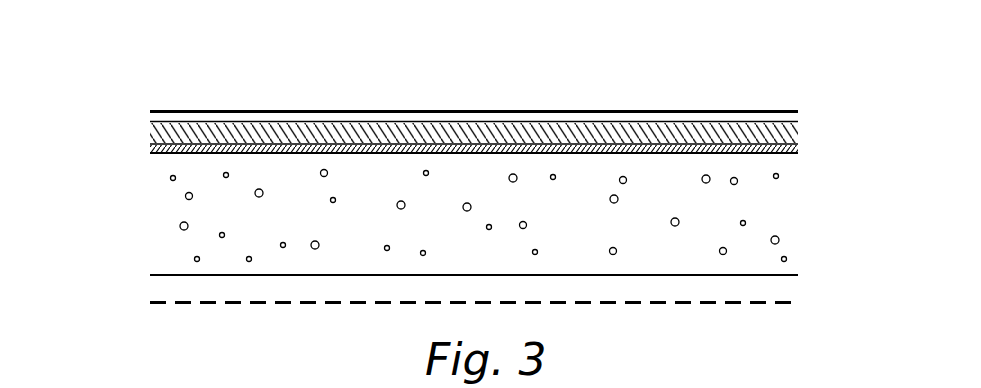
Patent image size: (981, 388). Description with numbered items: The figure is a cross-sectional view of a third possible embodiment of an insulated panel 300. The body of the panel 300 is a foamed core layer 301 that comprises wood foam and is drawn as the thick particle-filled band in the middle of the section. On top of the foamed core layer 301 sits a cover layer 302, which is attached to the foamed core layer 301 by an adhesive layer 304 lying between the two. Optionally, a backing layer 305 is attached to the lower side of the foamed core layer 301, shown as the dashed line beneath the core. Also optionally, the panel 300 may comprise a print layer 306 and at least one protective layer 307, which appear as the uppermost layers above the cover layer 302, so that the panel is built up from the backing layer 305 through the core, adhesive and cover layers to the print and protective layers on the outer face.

The insulated panel 300 is at (157, 93).
The foamed core layer 301 is at (778, 208).
The cover layer 302 is at (152, 132).
The adhesive layer 304 is at (150, 146).
The backing layer 305 is at (778, 292).
The print layer 306 is at (717, 115).
The protective layer 307 is at (475, 118).